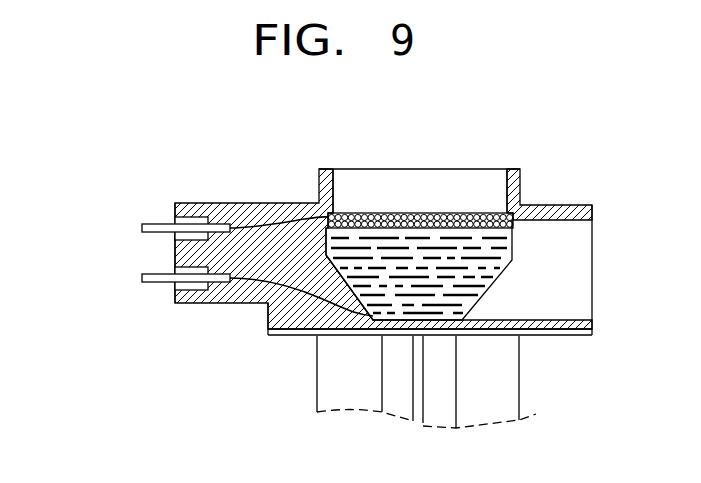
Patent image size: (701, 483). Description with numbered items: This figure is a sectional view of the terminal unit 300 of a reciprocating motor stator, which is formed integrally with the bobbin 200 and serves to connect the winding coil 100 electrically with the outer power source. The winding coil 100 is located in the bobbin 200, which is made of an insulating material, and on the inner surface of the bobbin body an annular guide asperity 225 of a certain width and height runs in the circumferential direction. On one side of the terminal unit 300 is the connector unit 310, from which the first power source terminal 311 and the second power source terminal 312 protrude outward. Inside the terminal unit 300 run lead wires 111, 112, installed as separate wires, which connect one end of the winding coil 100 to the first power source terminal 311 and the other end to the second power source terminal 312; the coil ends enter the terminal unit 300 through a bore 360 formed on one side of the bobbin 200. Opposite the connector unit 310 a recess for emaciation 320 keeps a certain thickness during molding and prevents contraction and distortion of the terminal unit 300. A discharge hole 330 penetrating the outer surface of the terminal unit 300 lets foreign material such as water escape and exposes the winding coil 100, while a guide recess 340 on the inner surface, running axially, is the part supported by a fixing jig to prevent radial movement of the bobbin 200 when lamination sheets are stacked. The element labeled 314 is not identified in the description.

The winding coil 100 is at (470, 212).
The lead wire 111 is at (238, 304).
The lead wire 112 is at (260, 203).
The bobbin 200 is at (316, 390).
The guide asperity 225 is at (417, 395).
The terminal unit 300 is at (293, 191).
The connector unit 310 is at (173, 205).
The first power source terminal 311 is at (142, 276).
The second power source terminal 312 is at (142, 226).
The insulating hole 314 is at (177, 239).
The recess for emaciation 320 is at (575, 273).
The discharge hole 330 is at (430, 187).
The guide recess 340 is at (562, 336).
The bore 360 is at (297, 340).